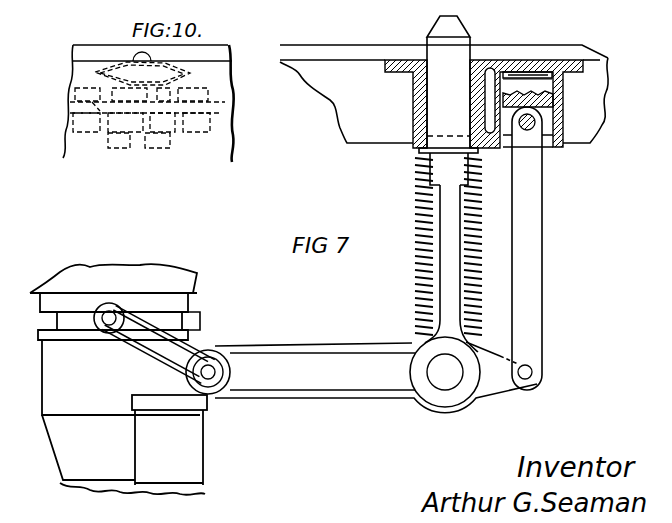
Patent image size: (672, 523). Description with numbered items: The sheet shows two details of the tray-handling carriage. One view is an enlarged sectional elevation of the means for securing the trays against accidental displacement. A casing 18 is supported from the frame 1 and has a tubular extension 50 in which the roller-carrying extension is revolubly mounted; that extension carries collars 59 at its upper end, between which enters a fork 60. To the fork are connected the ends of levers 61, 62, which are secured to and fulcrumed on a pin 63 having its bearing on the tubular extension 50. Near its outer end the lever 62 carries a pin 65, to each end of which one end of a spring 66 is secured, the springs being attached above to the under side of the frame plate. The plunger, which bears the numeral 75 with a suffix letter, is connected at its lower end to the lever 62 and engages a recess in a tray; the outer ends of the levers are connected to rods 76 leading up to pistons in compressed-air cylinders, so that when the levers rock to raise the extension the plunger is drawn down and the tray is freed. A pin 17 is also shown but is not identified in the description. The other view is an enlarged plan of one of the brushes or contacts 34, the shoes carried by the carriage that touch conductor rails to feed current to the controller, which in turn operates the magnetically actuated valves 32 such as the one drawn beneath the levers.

In FIG. 10, the frame of the carriage 1 is at (86, 68).
In FIG. 10, the track 75 is at (216, 53).
In FIG. 7, the track 75 is at (448, 184).
In FIG. 10, the brushes or contacts 34 is at (73, 132).
In FIG. 7, the casing 18 is at (560, 77).
In FIG. 7, the pivot pin 17 is at (547, 118).
In FIG. 7, the rods 76 is at (530, 250).
In FIG. 7, the spring 66 is at (420, 305).
In FIG. 7, the pin 65 is at (445, 372).
In FIG. 7, the lever 62 is at (376, 377).
In FIG. 7, the pin 63 is at (210, 375).
In FIG. 7, the lever 61 is at (182, 348).
In FIG. 7, the fork 60 is at (182, 328).
In FIG. 7, the collars 59 is at (50, 302).
In FIG. 7, the tubular extension 50 is at (117, 379).
In FIG. 7, the magnetically actuated valves 32 is at (169, 440).